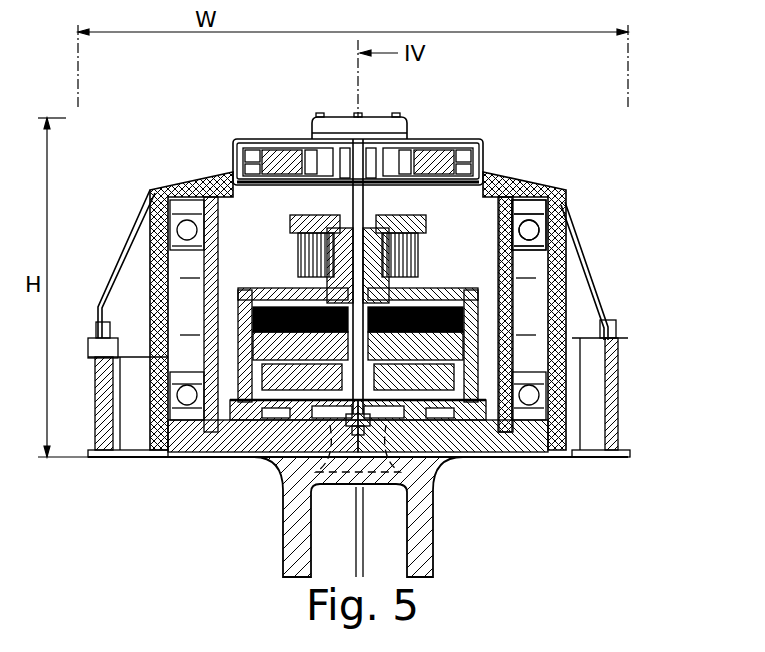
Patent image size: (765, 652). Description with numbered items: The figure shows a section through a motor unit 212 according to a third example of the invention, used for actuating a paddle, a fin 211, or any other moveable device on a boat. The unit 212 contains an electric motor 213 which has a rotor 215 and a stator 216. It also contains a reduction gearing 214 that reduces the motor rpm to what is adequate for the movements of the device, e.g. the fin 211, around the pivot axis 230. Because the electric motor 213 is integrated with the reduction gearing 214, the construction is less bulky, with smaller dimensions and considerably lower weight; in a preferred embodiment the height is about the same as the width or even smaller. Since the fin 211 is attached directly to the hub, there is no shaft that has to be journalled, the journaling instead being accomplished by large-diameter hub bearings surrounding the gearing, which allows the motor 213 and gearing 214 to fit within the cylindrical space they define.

The fin 211 is at (418, 503).
The motor unit 212 is at (621, 170).
The electric motor 213 is at (606, 232).
The reduction gearing 214 is at (642, 373).
The rotor 215 is at (458, 232).
The stator 216 is at (520, 280).
The pivot axis 230 is at (363, 550).